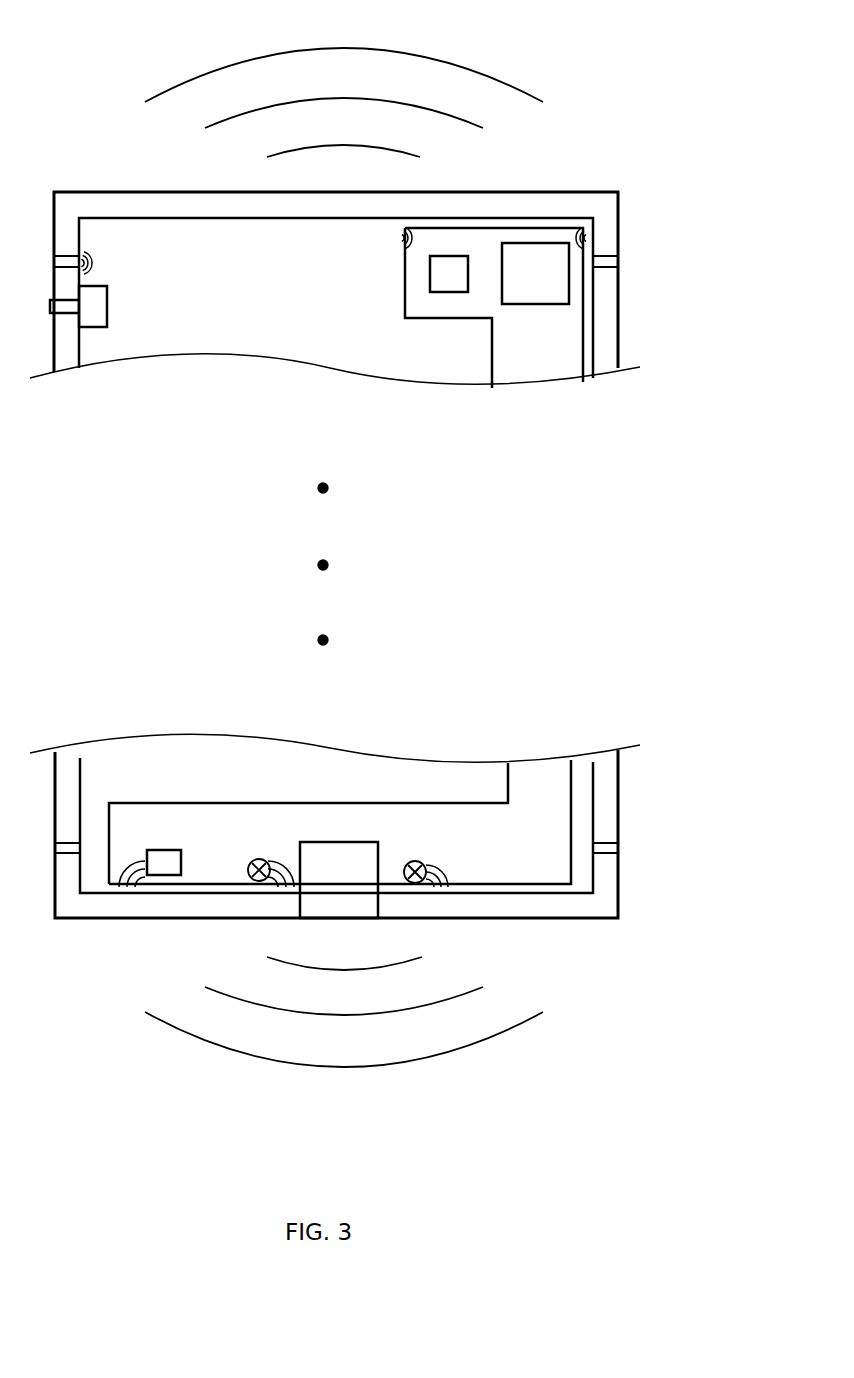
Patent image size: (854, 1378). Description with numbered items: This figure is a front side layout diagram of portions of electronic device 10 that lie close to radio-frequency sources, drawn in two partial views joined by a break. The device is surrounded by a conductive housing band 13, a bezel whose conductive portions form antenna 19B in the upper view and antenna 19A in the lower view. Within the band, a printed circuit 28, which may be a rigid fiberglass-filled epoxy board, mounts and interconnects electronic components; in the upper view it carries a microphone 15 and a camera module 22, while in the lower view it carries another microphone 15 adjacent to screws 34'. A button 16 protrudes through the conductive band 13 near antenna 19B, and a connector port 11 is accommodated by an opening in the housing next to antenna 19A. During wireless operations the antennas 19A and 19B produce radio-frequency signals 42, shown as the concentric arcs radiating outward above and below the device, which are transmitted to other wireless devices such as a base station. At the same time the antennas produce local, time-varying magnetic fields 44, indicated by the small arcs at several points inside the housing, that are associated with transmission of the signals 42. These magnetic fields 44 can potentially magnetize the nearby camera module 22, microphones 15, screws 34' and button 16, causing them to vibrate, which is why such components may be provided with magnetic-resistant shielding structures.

The device 10 is at (643, 130).
The connector port 11 is at (355, 918).
The housing band 13 is at (620, 285).
The microphone 15 is at (450, 295).
The button 16 is at (108, 305).
The antenna 19A is at (608, 873).
The antenna 19B is at (612, 232).
The camera module 22 is at (543, 305).
The printed circuit 28 is at (403, 312).
The screws 34' is at (327, 849).
The radio-frequency signals 42 is at (447, 34).
The local magnetic fields 44 is at (104, 262).